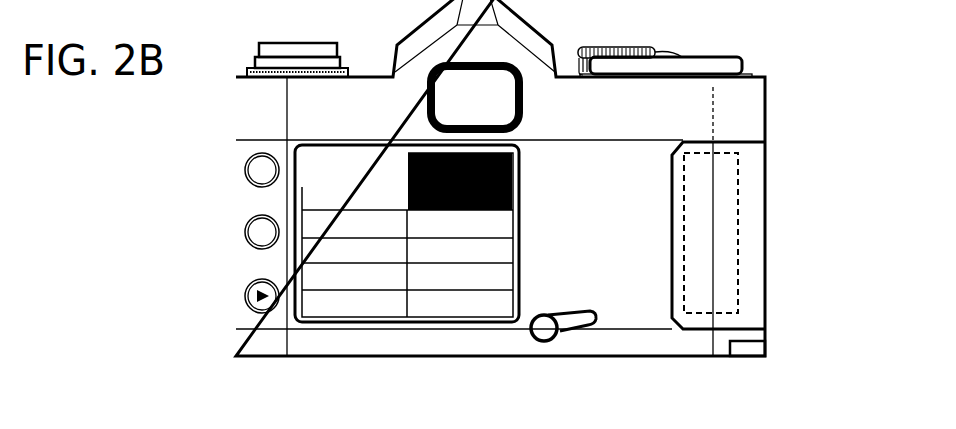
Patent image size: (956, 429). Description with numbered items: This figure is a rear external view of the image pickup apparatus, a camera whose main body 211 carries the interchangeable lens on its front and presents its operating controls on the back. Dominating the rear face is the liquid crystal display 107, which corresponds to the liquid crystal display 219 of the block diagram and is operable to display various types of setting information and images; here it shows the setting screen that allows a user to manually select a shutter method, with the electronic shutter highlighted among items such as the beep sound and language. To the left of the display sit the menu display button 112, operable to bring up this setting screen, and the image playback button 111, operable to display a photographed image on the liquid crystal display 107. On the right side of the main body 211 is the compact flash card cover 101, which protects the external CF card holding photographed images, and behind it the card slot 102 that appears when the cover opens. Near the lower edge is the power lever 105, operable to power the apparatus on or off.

The main body 211 is at (753, 120).
The menu display button 112 is at (253, 185).
The liquid crystal display 107 is at (307, 233).
The liquid crystal display 219 is at (293, 238).
The image playback button 111 is at (252, 297).
The compact flash card cover 101 is at (753, 285).
The card slot 102 is at (740, 195).
The power lever 105 is at (560, 338).